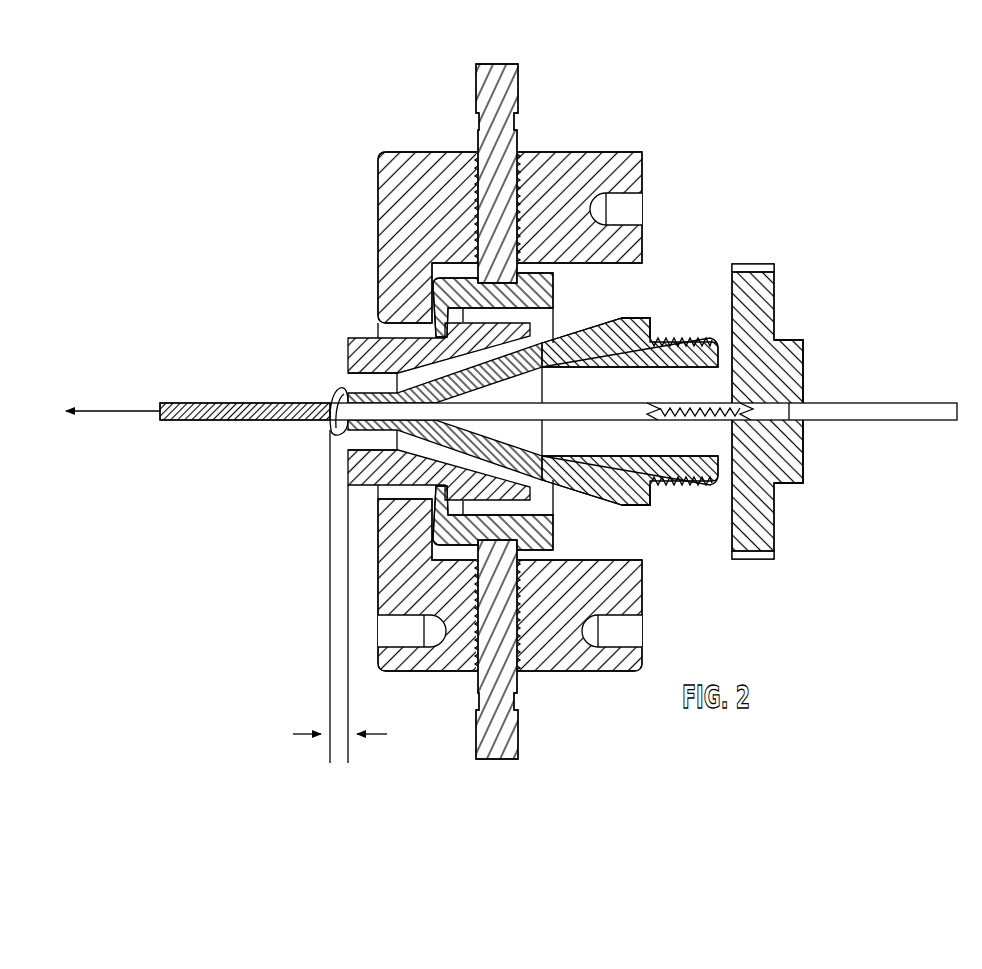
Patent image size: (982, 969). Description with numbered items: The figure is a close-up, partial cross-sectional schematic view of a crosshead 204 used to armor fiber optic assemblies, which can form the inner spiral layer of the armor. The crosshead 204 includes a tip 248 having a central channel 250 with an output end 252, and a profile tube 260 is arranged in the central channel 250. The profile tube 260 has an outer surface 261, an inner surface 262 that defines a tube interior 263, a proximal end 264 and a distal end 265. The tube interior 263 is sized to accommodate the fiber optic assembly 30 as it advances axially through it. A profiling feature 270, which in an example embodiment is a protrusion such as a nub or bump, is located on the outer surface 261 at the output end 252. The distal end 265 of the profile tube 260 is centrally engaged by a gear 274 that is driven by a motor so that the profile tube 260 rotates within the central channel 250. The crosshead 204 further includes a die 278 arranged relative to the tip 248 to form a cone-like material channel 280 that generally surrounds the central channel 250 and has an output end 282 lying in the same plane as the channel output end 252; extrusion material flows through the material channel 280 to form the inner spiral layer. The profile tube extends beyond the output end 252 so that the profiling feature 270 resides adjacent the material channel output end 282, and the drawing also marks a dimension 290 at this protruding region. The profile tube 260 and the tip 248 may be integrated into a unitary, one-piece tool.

The crosshead 204 is at (306, 114).
The die 278 is at (368, 338).
The output end 282 is at (347, 375).
The material channel 280 is at (428, 366).
The profiling feature 270 is at (346, 393).
The central channel 250 is at (619, 428).
The tip 248 is at (651, 315).
The profile tube 260 is at (677, 421).
The gear 274 is at (760, 263).
The inner surface 262 is at (778, 403).
The tube interior 263 is at (700, 420).
The distal end 265 is at (792, 415).
The fiber optic assembly 30 is at (872, 402).
The proximal end 264 is at (330, 425).
The outer surface 261 is at (340, 430).
The output end 252 is at (330, 512).
The gap distance 290 is at (340, 641).